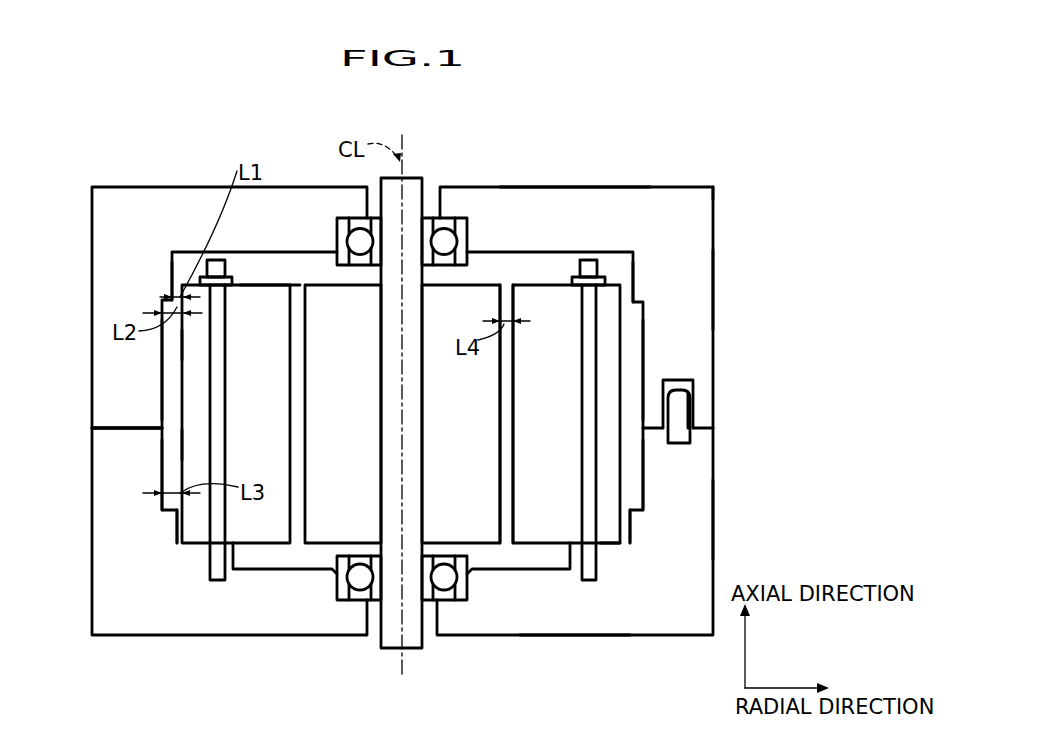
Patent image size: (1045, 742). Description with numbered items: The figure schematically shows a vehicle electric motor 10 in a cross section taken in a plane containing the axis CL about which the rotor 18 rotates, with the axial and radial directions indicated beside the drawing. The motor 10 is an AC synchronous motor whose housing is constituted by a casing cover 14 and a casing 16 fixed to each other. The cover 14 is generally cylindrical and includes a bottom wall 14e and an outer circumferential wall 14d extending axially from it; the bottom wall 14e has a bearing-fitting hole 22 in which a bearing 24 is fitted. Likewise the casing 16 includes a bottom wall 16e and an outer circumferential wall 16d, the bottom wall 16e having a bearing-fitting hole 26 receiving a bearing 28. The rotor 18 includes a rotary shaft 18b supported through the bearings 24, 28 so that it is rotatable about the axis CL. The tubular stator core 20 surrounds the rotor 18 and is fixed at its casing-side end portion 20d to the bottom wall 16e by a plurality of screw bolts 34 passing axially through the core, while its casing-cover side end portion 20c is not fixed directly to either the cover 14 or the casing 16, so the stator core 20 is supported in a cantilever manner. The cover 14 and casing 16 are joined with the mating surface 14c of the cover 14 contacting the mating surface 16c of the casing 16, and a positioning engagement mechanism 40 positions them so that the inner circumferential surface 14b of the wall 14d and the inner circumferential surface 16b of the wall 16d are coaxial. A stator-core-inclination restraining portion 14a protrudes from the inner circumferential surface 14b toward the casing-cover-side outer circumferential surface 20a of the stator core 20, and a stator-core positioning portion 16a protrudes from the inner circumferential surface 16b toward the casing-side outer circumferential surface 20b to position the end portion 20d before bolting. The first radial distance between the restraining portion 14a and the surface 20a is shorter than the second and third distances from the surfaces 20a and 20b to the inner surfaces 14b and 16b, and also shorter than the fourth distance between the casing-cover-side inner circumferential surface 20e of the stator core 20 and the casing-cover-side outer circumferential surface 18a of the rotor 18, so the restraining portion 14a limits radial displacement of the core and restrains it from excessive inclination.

The vehicle electric motor 10 is at (740, 160).
The casing cover 14 is at (130, 203).
The stator-core-inclination restraining portion 14a is at (178, 262).
The inner circumferential surface 14b is at (168, 352).
The mating surface 14c is at (105, 438).
The outer circumferential wall 14d is at (704, 306).
The bottom wall 14e is at (576, 204).
The casing 16 is at (125, 618).
The stator-core positioning portion 16a is at (178, 540).
The inner circumferential surface 16b is at (163, 468).
The mating surface 16c is at (152, 428).
The outer circumferential wall 16d is at (704, 520).
The bottom wall 16e is at (573, 622).
The rotor 18 is at (460, 507).
The casing-cover-side outer circumferential surface 18a is at (499, 297).
The rotary shaft 18b is at (373, 648).
The stator core 20 is at (553, 500).
The casing-cover-side outer circumferential surface 20a is at (183, 332).
The casing-side outer circumferential surface 20b is at (184, 449).
The casing-cover side end portion 20c is at (255, 270).
The casing-side end portion 20d is at (607, 565).
The casing-cover-side inner circumferential surface 20e is at (514, 297).
The bearing-fitting hole 22 is at (455, 220).
The bearing 24 is at (430, 218).
The bearing-fitting hole 26 is at (463, 600).
The bearing 28 is at (338, 588).
The screw bolts 34 is at (213, 558).
The positioning engagement mechanism 40 is at (705, 388).